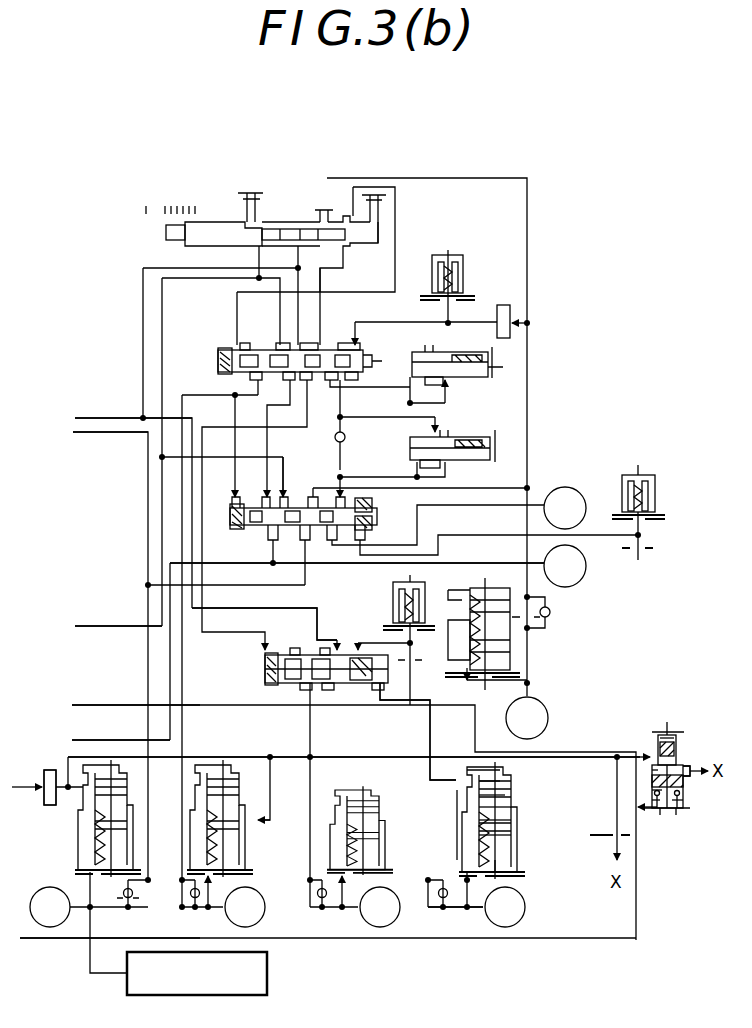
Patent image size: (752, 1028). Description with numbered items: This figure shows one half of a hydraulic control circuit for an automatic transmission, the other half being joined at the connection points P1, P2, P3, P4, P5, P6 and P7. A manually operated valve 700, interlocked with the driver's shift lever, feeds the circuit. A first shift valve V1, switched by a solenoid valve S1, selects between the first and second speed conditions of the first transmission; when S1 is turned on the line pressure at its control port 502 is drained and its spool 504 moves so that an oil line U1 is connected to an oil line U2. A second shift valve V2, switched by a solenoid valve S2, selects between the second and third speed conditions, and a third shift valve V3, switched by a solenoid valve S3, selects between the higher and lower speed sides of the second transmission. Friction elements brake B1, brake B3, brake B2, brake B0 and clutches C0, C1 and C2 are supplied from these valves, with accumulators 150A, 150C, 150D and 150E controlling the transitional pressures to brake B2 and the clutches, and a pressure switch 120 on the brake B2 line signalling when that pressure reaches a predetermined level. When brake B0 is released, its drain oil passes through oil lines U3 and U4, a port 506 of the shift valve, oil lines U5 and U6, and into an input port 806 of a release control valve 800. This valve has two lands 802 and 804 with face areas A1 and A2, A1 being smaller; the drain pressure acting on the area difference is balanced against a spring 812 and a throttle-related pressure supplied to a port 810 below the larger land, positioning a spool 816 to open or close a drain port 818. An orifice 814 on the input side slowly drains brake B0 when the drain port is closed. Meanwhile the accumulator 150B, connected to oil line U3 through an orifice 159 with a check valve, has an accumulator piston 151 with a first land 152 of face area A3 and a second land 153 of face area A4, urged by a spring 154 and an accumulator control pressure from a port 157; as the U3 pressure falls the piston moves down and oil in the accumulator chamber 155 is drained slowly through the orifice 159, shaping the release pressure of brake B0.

The manually operated valve 700 is at (158, 240).
The second shift valve V2 is at (215, 357).
The solenoid valve S2 is at (450, 256).
The connection point P1 is at (133, 407).
The connection point P2 is at (110, 444).
The connection point P3 is at (118, 616).
The connection point P4 is at (136, 694).
The connection point P5 is at (121, 731).
The connection point P6 is at (33, 777).
The connection point P7 is at (110, 952).
The oil line U1 is at (318, 490).
The first shift valve V1 is at (228, 528).
The spool 504 is at (356, 505).
The control port 502 is at (362, 528).
The brake B1 is at (565, 508).
The solenoid valve S1 is at (622, 482).
The brake B3 is at (565, 566).
The oil line U2 is at (307, 541).
The solenoid valve S3 is at (393, 590).
The oil line U5 is at (338, 645).
The port 506 is at (352, 657).
The third shift valve V3 is at (263, 666).
The accumulator 150D is at (462, 662).
The oil line U4 is at (420, 704).
The clutch C1 is at (527, 718).
The oil line U6 is at (385, 757).
The accumulator 150A is at (78, 840).
The accumulator 150E is at (250, 853).
The port 157 is at (457, 827).
The accumulator 150C is at (378, 830).
The spring 154 is at (482, 772).
The second land 153 is at (480, 785).
The face area A4 is at (492, 800).
The accumulator piston 151 is at (500, 815).
The face area A3 is at (495, 832).
The first land 152 is at (500, 848).
The accumulator 150B is at (500, 862).
The accumulator chamber 155 is at (498, 875).
The orifice with check valve 159 is at (490, 892).
The oil line U3 is at (466, 908).
The brake B0 is at (505, 907).
The clutch C0 is at (380, 907).
The clutch C2 is at (245, 907).
The brake B2 is at (50, 907).
The pressure switch 120 is at (268, 985).
The port 806 is at (660, 742).
The release control valve 800 is at (672, 735).
The face area A1 is at (660, 726).
The land 802 is at (682, 765).
The drain port 818 is at (690, 768).
The orifice 814 is at (600, 835).
The face area A2 is at (640, 783).
The land 804 is at (683, 783).
The spring 812 is at (681, 800).
The port 810 is at (658, 810).
The spool 816 is at (679, 814).